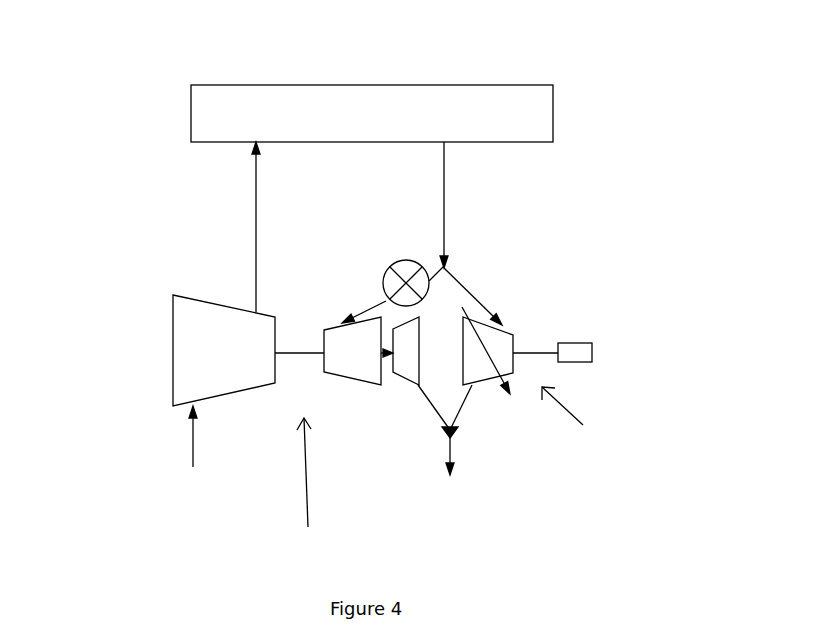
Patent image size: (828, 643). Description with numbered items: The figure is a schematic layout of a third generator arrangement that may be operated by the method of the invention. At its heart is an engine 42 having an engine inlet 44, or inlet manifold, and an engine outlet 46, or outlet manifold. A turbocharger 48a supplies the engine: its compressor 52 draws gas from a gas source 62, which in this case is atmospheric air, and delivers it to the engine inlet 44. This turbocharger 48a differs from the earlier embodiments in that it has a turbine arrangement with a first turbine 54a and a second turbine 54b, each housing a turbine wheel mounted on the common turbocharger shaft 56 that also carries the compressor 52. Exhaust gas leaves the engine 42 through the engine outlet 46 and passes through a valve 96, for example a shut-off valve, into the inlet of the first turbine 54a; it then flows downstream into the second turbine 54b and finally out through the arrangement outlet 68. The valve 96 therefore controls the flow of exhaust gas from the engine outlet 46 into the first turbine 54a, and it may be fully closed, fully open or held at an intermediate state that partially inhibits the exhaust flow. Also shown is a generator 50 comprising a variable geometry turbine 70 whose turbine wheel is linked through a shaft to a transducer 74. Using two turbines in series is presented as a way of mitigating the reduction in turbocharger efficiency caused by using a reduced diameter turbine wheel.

The engine 42 is at (352, 103).
The engine inlet 44 is at (256, 233).
The engine outlet 46 is at (444, 190).
The turbocharger 48a is at (314, 484).
The generator 50 is at (576, 414).
The compressor 52 is at (179, 350).
The first turbine 54a is at (361, 382).
The second turbine 54b is at (407, 383).
The turbocharger shaft 56 is at (298, 353).
The gas source 62 is at (201, 493).
The arrangement outlet 68 is at (450, 448).
The variable geometry turbine 70 is at (512, 332).
The transducer 74 is at (577, 343).
The valve 96 is at (422, 266).